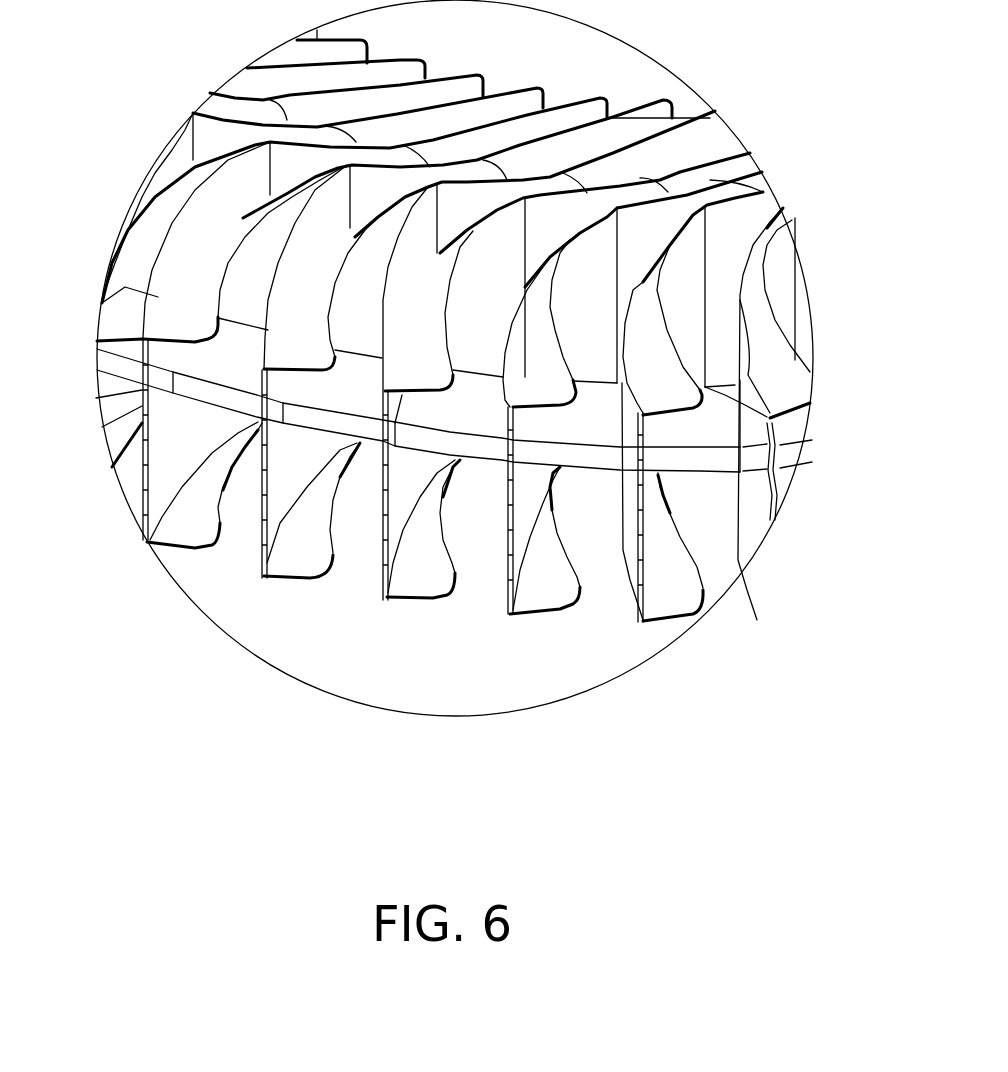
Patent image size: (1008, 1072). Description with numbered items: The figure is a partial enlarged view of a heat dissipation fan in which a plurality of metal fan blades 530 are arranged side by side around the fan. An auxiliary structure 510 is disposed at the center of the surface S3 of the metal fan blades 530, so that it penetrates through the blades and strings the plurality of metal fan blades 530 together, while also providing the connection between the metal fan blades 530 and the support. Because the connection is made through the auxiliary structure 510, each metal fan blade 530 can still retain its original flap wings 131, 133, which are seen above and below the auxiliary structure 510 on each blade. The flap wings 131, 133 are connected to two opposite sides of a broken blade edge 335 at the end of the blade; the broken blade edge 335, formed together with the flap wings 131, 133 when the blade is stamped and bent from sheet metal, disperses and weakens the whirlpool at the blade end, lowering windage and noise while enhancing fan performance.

The metal fan blades 530 is at (237, 177).
The flap wing 131 is at (185, 293).
The flap wing 133 is at (185, 527).
The broken blade edge 335 is at (645, 567).
The auxiliary structure 510 is at (717, 435).
The surface S3 is at (279, 484).